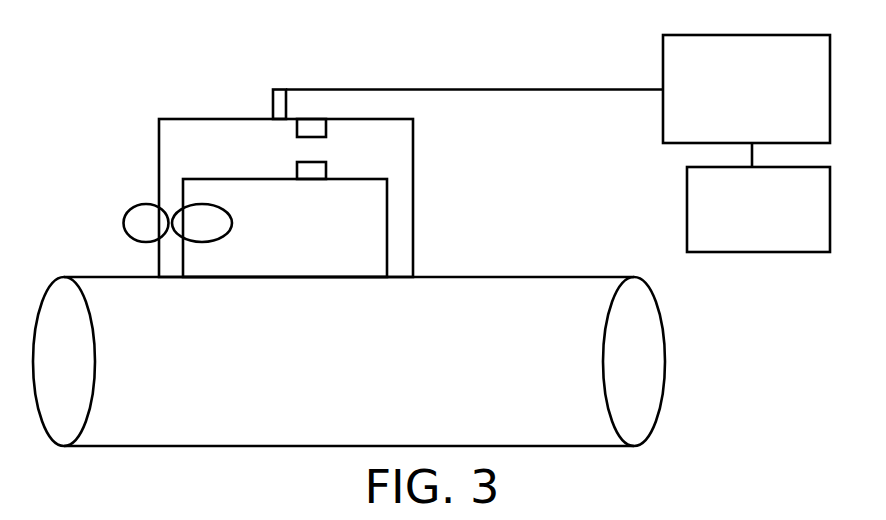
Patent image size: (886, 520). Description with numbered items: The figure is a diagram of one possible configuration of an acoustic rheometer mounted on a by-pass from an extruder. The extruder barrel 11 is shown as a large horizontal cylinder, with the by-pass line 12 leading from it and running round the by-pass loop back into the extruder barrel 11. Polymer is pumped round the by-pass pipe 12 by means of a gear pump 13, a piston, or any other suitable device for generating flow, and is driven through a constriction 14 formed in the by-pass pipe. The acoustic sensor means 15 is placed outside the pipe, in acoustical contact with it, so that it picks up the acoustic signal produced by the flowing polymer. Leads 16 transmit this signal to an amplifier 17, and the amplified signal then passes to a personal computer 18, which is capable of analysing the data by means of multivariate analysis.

The extruder barrel 11 is at (515, 276).
The by-pass line 12 is at (159, 139).
The gear pump 13 is at (123, 226).
The constriction 14 is at (302, 151).
The acoustic sensor means 15 is at (273, 104).
The leads 16 is at (472, 88).
The amplifier 17 is at (663, 128).
The personal computer 18 is at (687, 236).